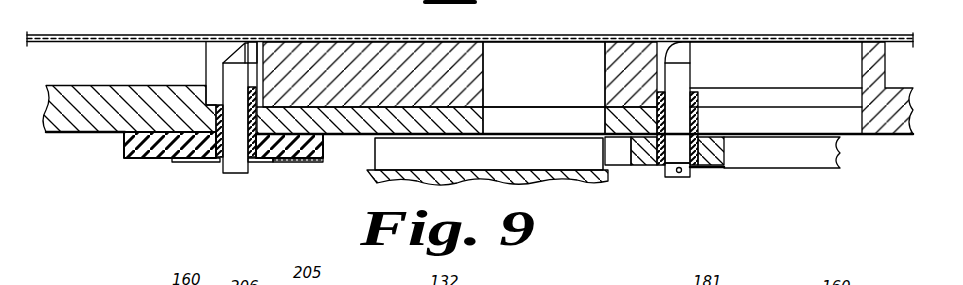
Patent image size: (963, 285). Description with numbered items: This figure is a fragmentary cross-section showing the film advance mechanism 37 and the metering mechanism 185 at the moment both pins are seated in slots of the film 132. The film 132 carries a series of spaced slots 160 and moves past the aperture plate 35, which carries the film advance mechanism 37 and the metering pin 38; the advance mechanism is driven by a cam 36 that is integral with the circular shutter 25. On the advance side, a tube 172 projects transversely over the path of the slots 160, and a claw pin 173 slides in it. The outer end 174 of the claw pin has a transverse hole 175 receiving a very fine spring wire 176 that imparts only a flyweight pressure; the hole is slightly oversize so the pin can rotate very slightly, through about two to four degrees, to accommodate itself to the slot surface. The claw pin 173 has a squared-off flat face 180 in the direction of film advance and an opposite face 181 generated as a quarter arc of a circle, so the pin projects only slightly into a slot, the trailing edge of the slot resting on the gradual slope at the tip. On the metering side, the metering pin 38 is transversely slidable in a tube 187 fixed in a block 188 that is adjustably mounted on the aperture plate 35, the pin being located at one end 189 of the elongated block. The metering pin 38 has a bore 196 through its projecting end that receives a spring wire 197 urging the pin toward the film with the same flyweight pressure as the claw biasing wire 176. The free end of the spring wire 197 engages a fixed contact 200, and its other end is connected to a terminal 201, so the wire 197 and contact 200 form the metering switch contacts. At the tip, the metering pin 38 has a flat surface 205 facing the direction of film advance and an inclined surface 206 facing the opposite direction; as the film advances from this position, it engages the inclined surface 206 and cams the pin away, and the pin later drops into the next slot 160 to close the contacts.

The slots 160 is at (133, 37).
The film 132 is at (300, 38).
The inclined surface 206 is at (233, 50).
The flat surface 205 is at (268, 52).
The tube 187 is at (217, 87).
The bore 196 is at (235, 174).
The spring wire 197 is at (232, 148).
The metering mechanism 185 is at (178, 180).
The block 188 is at (124, 158).
The terminal 201 is at (207, 163).
The end 189 is at (317, 152).
The metering pin 38 is at (285, 163).
The fixed contact 200 is at (320, 163).
The cam 36 is at (489, 154).
The circular shutter 25 is at (603, 178).
The face 181 is at (661, 40).
The outer end 174 is at (683, 175).
The spring wire 176 is at (678, 175).
The transverse hole 175 is at (677, 174).
The flat face 180 is at (693, 55).
The tube 172 is at (697, 97).
The claw pin 173 is at (680, 127).
The film advance mechanism 37 is at (720, 185).
The aperture plate 35 is at (898, 125).